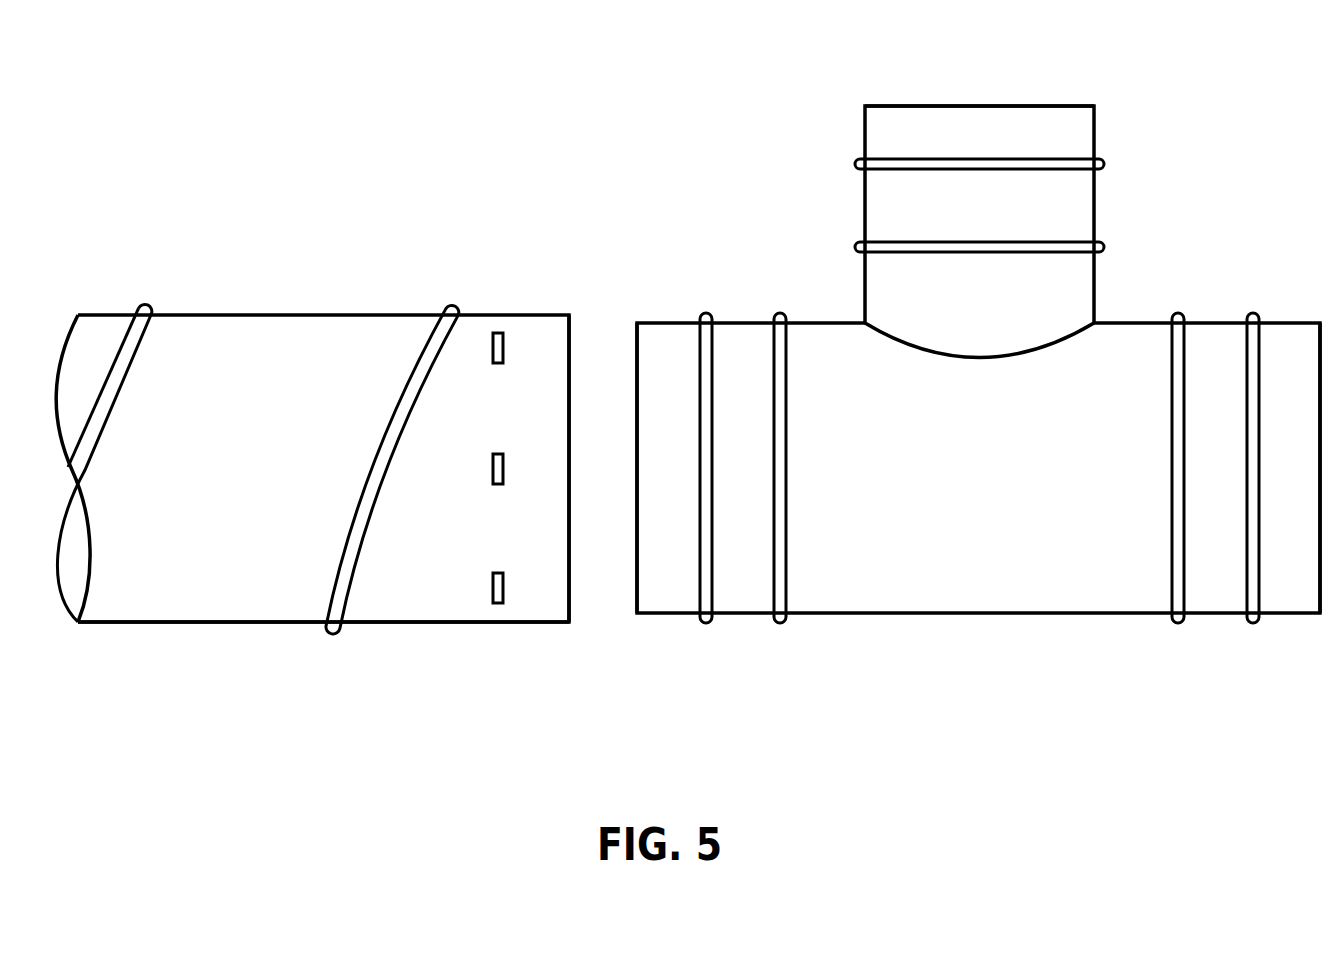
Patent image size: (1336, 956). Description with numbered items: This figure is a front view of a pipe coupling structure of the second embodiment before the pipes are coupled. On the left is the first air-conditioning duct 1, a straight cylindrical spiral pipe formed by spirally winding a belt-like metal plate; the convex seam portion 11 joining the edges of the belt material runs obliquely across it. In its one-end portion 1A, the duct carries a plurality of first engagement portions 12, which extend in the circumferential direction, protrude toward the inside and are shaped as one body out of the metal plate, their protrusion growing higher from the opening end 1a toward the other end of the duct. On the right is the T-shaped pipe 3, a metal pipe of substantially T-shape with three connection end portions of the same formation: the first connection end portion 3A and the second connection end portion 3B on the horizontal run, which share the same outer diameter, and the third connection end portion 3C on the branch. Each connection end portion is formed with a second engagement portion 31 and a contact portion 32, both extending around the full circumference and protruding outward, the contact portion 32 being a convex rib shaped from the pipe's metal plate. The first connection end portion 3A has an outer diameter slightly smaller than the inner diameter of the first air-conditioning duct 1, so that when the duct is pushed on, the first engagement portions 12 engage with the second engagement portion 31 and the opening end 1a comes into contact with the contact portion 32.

The first air-conditioning duct 1 is at (260, 268).
The convex seam portion 11 is at (120, 338).
The first engagement portion 12 is at (503, 345).
The opening end 1a is at (572, 335).
The one-end portion 1A is at (540, 630).
The T-shaped pipe 3 is at (757, 120).
The second engagement portion 31 is at (890, 158).
The contact portion 32 is at (885, 242).
The first connection end portion 3A is at (740, 628).
The second connection end portion 3B is at (1272, 628).
The third connection end portion 3C is at (1113, 140).